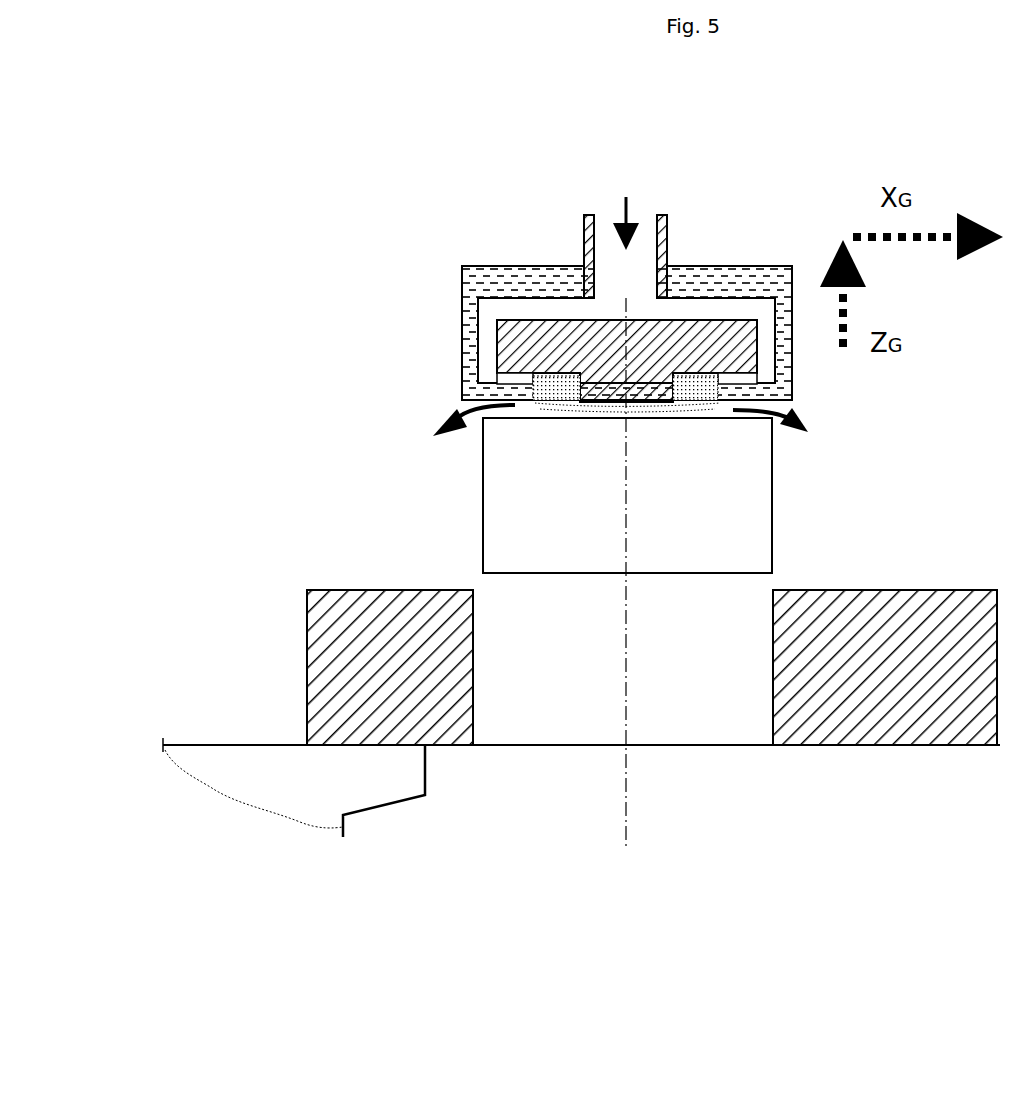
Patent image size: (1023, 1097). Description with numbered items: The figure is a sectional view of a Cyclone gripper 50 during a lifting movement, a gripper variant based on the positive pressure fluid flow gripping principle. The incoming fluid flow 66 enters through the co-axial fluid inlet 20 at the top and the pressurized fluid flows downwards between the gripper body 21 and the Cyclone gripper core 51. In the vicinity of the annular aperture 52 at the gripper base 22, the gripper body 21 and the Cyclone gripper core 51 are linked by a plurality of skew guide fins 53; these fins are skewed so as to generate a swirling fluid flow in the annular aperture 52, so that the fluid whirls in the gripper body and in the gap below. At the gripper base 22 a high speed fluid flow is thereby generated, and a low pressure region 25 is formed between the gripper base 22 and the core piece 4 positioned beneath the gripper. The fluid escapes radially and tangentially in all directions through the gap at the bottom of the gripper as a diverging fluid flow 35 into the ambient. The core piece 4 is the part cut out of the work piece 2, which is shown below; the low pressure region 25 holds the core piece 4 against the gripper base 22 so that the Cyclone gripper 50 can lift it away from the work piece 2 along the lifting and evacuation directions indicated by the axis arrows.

The work piece 2 is at (292, 633).
The core piece 4 is at (533, 490).
The fluid inlet 20 is at (622, 200).
The gripper body 21 is at (488, 288).
The gripper base 22 is at (492, 403).
The low pressure region 25 is at (727, 412).
The diverging fluid flow 35 is at (808, 417).
The Cyclone gripper 50 is at (735, 225).
The Cyclone gripper core 51 is at (543, 338).
The annular aperture 52 is at (693, 390).
The skew guide fin 53 is at (502, 378).
The incoming fluid flow 66 is at (581, 223).